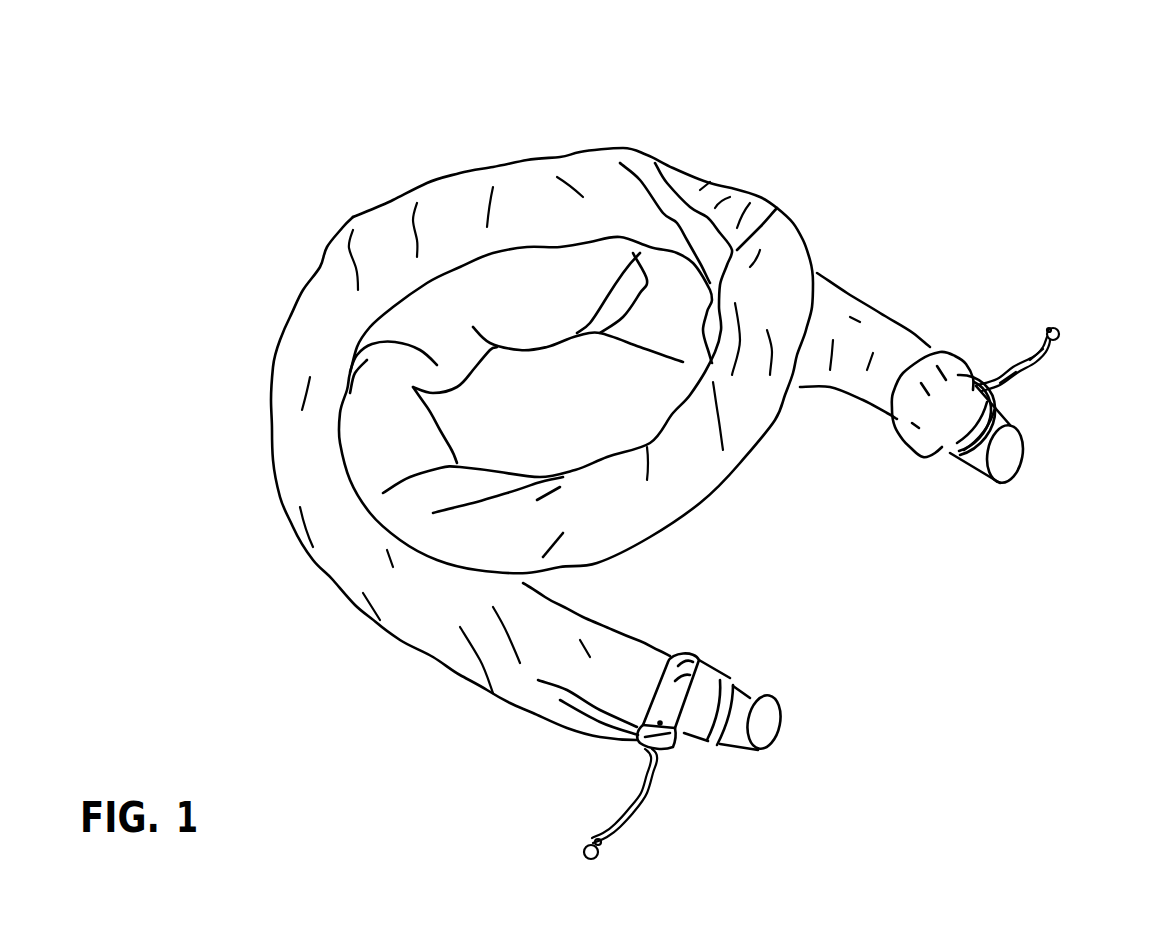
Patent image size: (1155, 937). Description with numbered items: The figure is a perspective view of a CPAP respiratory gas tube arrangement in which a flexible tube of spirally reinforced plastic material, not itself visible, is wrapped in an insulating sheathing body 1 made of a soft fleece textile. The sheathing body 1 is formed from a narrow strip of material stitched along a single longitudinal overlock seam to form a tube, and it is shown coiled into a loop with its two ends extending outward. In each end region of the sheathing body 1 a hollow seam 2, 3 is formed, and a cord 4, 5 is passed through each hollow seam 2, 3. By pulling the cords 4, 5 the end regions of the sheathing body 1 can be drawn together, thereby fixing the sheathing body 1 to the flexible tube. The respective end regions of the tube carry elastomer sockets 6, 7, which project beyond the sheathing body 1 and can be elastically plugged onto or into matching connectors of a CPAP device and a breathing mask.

The sheathing body 1 is at (523, 190).
The hollow seam 2 is at (940, 363).
The hollow seam 3 is at (698, 663).
The cord 4 is at (1033, 357).
The cord 5 is at (640, 823).
The elastomer socket 6 is at (980, 463).
The elastomer socket 7 is at (768, 697).